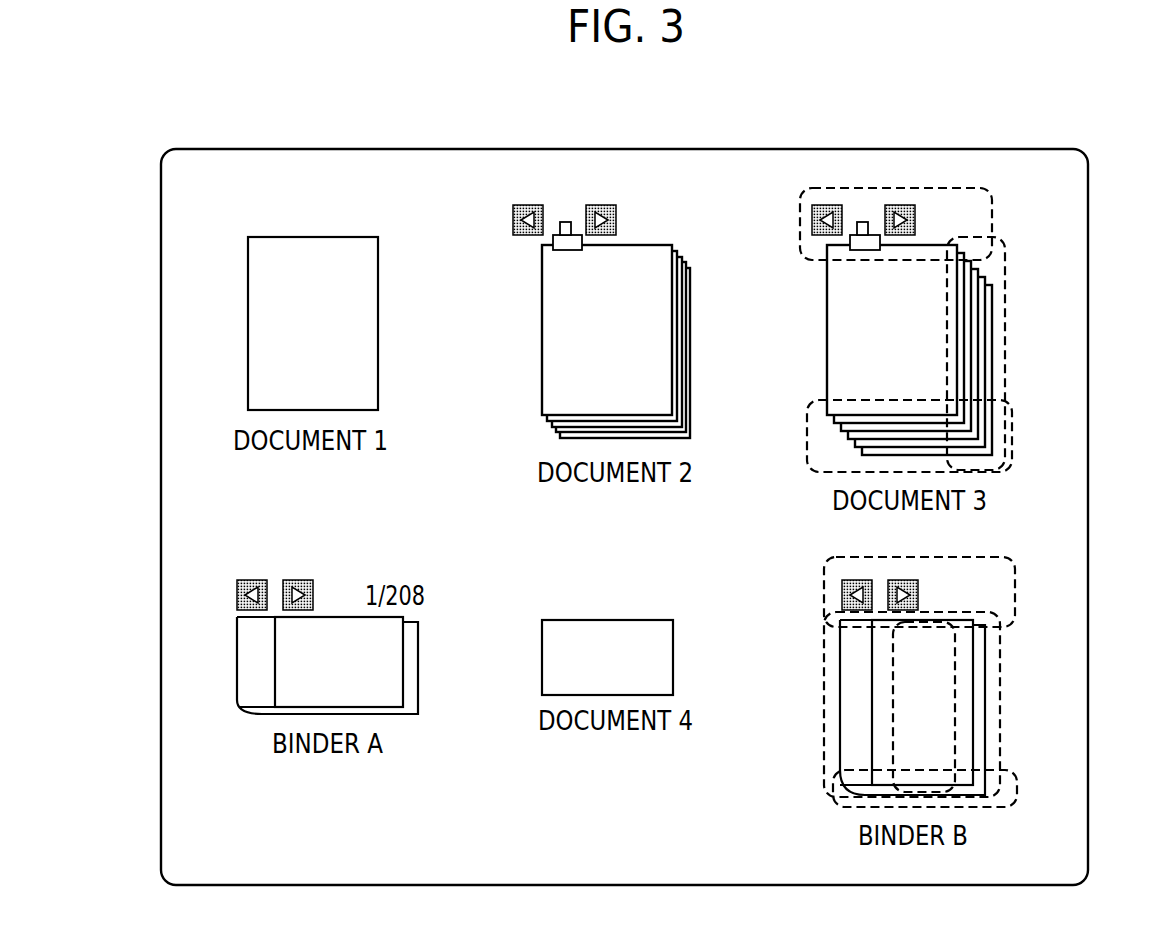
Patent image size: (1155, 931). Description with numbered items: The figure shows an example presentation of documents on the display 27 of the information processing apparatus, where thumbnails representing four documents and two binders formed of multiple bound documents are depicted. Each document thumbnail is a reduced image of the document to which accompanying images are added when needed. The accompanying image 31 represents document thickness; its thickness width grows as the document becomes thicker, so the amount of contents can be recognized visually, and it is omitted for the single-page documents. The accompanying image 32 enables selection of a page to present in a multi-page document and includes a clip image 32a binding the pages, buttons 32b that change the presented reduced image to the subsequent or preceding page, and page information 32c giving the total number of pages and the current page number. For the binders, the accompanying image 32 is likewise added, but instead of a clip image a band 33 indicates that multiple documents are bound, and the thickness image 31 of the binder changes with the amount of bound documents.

The display 27 is at (250, 149).
The accompanying image 31 is at (1012, 430).
The accompanying image 32 is at (992, 215).
The clip image 32a is at (862, 222).
The buttons 32b is at (821, 205).
The page information 32c is at (963, 207).
The band 33 is at (824, 752).